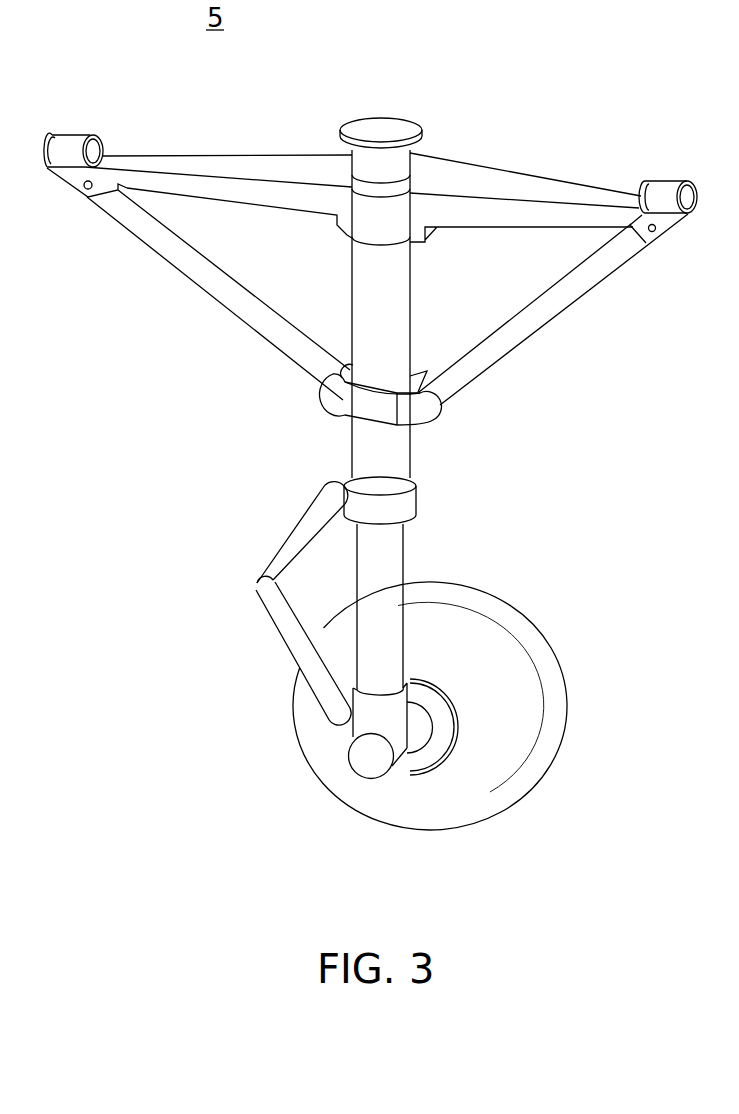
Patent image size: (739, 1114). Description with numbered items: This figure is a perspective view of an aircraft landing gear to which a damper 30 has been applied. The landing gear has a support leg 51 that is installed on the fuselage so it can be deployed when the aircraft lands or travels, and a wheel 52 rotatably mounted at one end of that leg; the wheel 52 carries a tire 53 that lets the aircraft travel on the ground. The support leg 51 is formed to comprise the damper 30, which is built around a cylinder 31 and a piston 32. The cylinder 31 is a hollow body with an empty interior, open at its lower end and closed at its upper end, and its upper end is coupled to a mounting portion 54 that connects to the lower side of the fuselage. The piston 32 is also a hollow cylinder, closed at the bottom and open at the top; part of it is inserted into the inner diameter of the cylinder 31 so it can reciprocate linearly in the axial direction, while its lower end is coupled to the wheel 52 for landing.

The damper 30 is at (538, 467).
The cylinder 31 is at (388, 335).
The piston 32 is at (390, 565).
The support leg 51 is at (595, 493).
The wheel 52 is at (416, 833).
The tire 53 is at (556, 699).
The mounting portion 54 is at (374, 130).